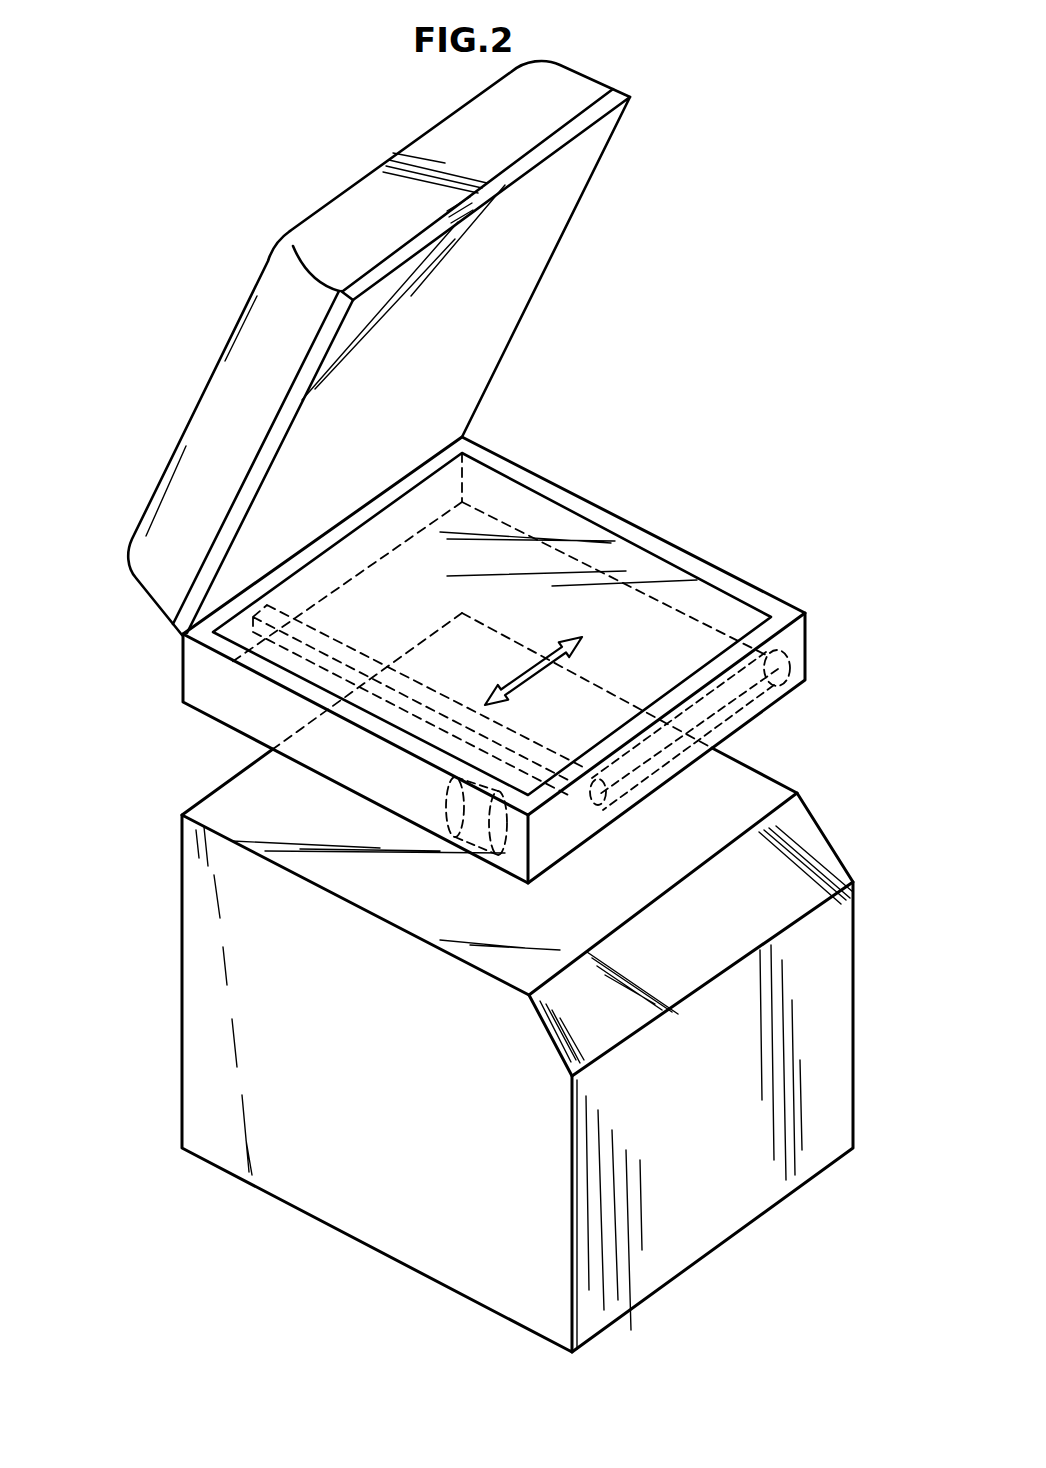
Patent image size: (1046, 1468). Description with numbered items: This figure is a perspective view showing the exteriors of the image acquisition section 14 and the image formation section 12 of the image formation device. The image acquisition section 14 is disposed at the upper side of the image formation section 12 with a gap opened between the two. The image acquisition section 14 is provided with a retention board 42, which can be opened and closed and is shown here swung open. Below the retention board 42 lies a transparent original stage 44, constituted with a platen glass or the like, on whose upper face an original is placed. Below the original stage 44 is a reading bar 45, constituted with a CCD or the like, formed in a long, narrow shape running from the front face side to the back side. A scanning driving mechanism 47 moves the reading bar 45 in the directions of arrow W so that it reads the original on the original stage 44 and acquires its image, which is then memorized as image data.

The image formation section 12 is at (173, 942).
The image acquisition section 14 is at (429, 681).
The retention board 42 is at (558, 222).
The original stage 44 is at (674, 590).
The reading bar 45 is at (611, 797).
The scanning driving mechanism 47 is at (503, 855).
The arrow W is at (546, 662).